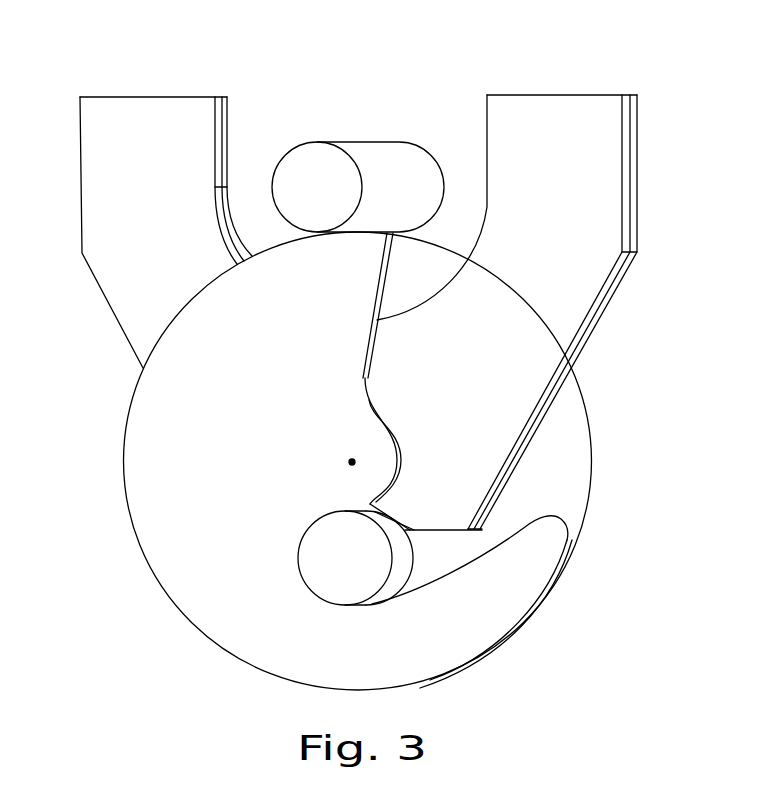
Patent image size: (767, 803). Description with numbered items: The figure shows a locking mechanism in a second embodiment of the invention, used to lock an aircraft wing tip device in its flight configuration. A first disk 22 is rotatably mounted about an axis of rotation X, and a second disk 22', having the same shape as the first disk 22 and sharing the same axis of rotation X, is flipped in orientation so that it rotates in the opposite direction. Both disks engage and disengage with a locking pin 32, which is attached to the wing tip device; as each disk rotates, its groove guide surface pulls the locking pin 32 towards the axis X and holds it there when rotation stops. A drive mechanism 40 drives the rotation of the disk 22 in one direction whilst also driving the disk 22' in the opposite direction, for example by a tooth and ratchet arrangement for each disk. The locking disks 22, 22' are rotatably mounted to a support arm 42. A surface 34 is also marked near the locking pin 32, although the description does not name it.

The first disk 22 is at (317, 393).
The second disk 22' is at (540, 546).
The locking pin 32 is at (337, 588).
The support surface 34 is at (418, 532).
The drive mechanism 40 is at (372, 148).
The support arm 42 is at (600, 201).
The axis of rotation X is at (352, 462).